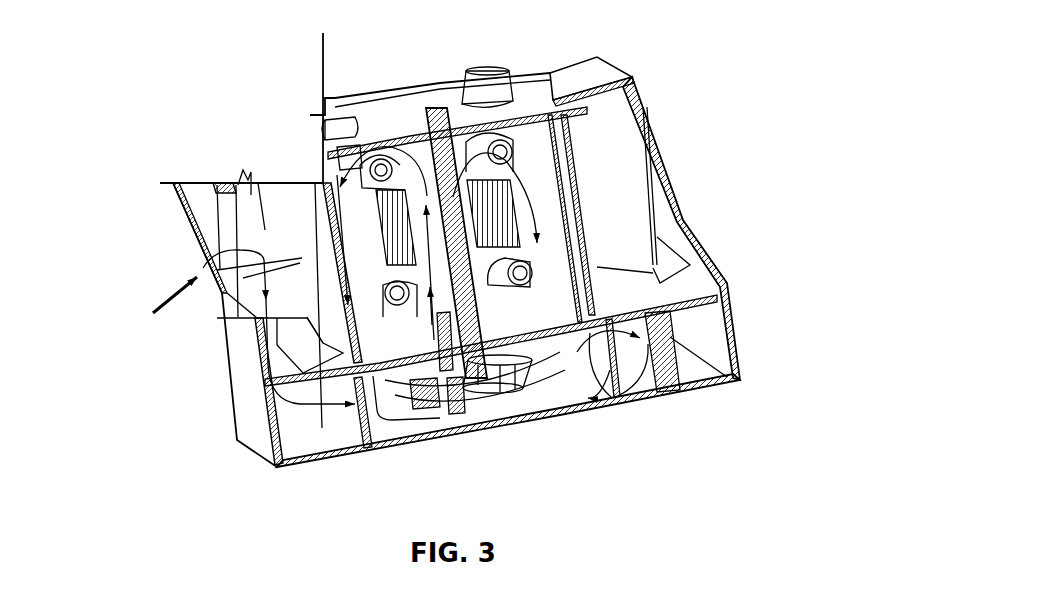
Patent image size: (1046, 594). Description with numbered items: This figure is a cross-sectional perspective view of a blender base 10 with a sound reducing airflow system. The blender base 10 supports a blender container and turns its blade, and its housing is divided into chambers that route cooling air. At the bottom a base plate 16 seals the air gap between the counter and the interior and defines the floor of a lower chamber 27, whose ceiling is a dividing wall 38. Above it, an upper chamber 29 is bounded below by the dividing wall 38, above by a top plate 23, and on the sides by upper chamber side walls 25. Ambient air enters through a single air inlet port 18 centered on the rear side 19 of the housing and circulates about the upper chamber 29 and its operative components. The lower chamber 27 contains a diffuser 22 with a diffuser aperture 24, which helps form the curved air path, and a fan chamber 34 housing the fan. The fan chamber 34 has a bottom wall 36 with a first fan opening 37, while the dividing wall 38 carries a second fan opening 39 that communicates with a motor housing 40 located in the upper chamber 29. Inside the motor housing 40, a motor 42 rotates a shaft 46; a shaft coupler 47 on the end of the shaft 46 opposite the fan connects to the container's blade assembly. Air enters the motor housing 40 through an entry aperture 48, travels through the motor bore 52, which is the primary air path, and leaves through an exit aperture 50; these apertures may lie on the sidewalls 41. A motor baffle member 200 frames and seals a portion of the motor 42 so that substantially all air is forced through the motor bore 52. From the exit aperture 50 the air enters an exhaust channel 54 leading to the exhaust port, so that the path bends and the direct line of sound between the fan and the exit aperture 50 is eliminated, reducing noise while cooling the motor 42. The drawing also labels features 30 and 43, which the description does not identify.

The blender base 10 is at (157, 60).
The base plate 16 is at (390, 450).
The air inlet port 18 is at (192, 257).
The rear side 19 is at (232, 424).
The diffuser 22 is at (363, 437).
The top plate 23 is at (383, 118).
The diffuser aperture 24 is at (665, 393).
The upper chamber side walls 25 is at (262, 357).
The lower chamber 27 is at (512, 412).
The upper chamber 29 is at (287, 207).
The partition wall 30 is at (285, 446).
The fan chamber 34 is at (613, 397).
The bottom wall 36 is at (580, 403).
The first fan opening 37 is at (480, 405).
The dividing wall 38 is at (617, 297).
The second fan opening 39 is at (507, 320).
The motor housing 40 is at (545, 235).
The sidewalls 41 is at (530, 268).
The motor 42 is at (497, 170).
The cylinder 43 is at (525, 210).
The shaft 46 is at (480, 197).
The shaft coupler 47 is at (473, 90).
The entry aperture 48 is at (445, 402).
The exit aperture 50 is at (383, 155).
The motor bore 52 is at (392, 118).
The exhaust channel 54 is at (332, 250).
The motor baffle member 200 is at (217, 318).